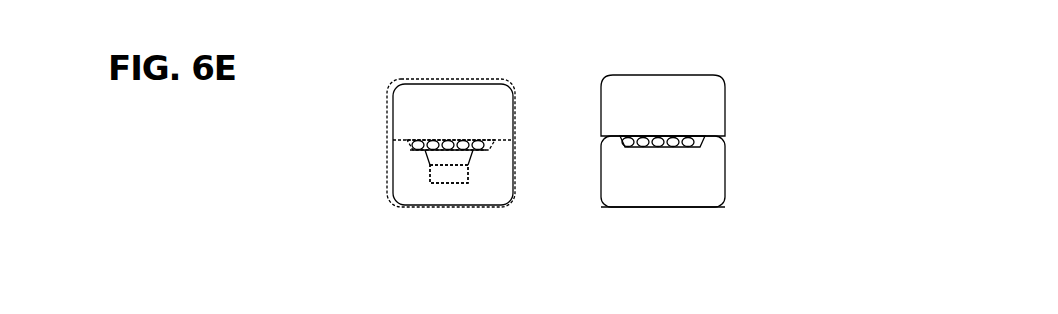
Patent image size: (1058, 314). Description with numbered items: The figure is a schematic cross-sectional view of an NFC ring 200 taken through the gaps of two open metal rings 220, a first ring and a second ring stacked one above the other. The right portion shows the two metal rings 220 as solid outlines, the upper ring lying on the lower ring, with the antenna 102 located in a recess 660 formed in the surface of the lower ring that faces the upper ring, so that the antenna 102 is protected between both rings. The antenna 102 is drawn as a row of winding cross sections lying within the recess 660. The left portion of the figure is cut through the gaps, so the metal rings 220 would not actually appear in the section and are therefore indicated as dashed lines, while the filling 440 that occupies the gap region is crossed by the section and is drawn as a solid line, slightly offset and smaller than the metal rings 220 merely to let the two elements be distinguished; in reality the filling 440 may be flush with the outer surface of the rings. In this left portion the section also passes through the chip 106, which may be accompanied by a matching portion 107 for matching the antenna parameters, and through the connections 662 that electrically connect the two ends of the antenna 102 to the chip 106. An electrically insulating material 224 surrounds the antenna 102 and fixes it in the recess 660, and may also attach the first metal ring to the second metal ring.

The filling 440 is at (422, 90).
The electrically insulating material 224 is at (490, 142).
The connections 662 is at (420, 152).
The recess 660 is at (495, 145).
The chip 106 is at (450, 173).
The matching portion 107 is at (479, 234).
The NFC ring 200 is at (727, 131).
The metal ring 220 is at (686, 131).
The antenna 102 is at (658, 141).